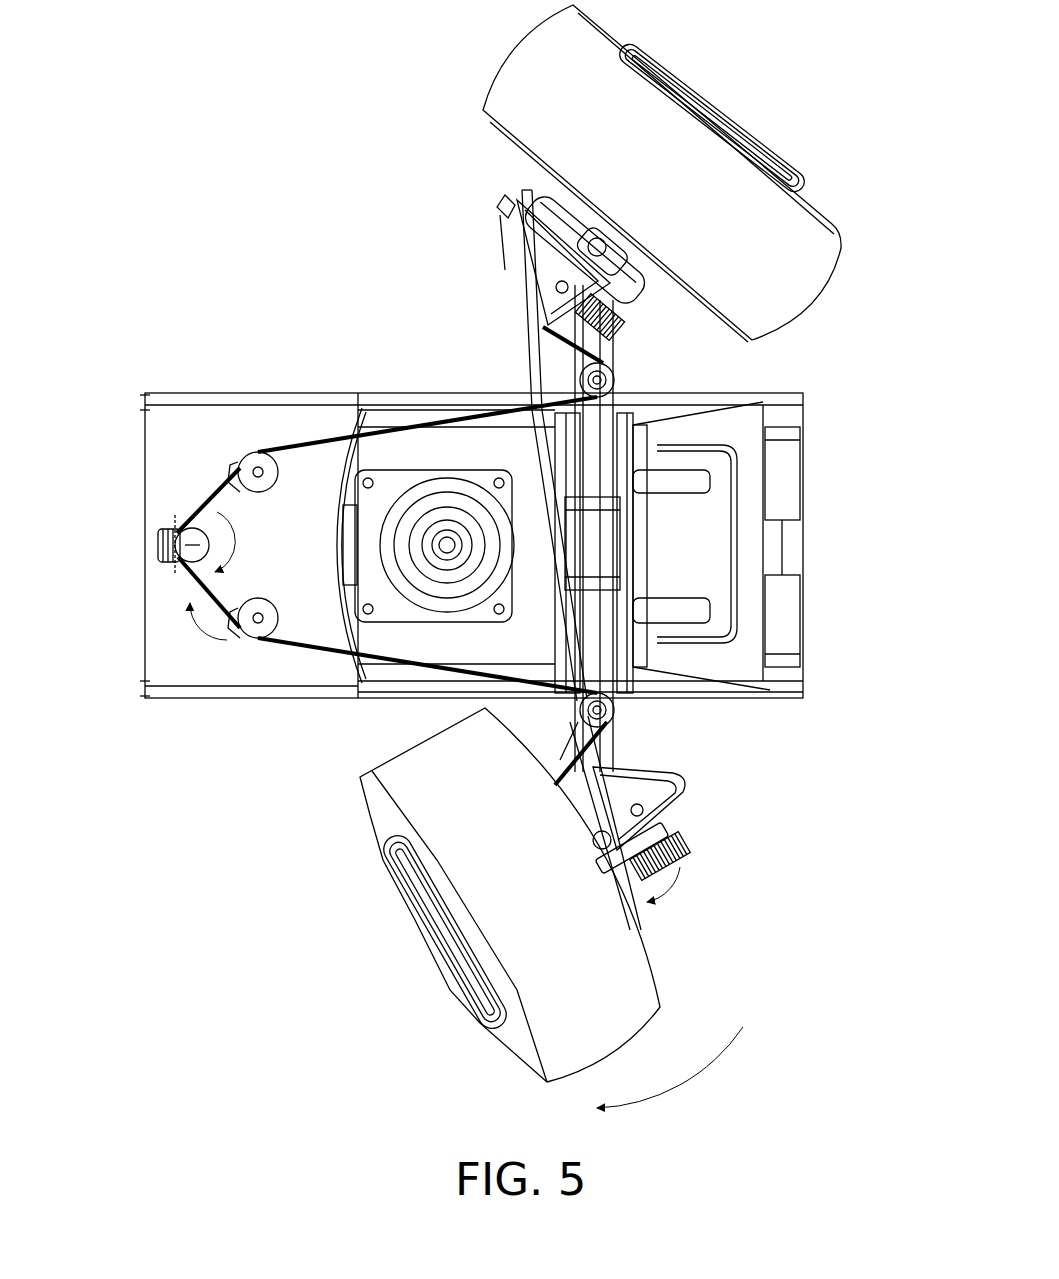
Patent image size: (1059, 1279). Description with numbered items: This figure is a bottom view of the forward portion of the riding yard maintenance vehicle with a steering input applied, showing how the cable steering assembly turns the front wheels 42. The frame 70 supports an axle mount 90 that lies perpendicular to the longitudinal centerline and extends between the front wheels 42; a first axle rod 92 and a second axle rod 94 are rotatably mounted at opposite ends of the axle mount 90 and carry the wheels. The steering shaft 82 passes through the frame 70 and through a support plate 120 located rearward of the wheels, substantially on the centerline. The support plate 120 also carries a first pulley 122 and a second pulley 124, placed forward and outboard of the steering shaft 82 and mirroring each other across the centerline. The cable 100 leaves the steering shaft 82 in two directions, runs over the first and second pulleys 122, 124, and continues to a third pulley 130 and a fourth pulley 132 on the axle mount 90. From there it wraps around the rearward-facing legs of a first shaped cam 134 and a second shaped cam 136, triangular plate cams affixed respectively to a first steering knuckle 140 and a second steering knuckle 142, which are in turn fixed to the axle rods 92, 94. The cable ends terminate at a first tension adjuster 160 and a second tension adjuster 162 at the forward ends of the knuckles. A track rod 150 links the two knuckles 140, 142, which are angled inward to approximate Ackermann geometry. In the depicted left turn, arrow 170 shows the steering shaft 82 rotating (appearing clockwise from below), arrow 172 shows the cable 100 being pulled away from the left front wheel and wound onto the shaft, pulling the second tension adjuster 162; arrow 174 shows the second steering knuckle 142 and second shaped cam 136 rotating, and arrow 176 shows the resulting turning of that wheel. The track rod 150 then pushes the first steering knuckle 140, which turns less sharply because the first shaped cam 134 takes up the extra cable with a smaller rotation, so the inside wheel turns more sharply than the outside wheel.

The front wheels 42 is at (537, 58).
The frame 70 is at (499, 515).
The steering shaft 82 is at (125, 537).
The axle mount 90 is at (602, 747).
The first axle rod 92 is at (635, 239).
The second axle rod 94 is at (565, 849).
The cable 100 is at (391, 556).
The support plate 120 is at (471, 481).
The first pulley 122 is at (220, 456).
The second pulley 124 is at (231, 676).
The third pulley 130 is at (648, 376).
The fourth pulley 132 is at (607, 713).
The first shaped cam 134 is at (490, 260).
The second shaped cam 136 is at (688, 788).
The first steering knuckle 140 is at (533, 226).
The second steering knuckle 142 is at (688, 833).
The track rod 150 is at (513, 445).
The first tension adjuster 160 is at (643, 321).
The second tension adjuster 162 is at (687, 847).
The arrow 170 is at (266, 536).
The arrow 172 is at (193, 635).
The arrow 174 is at (701, 891).
The arrow 176 is at (696, 1067).